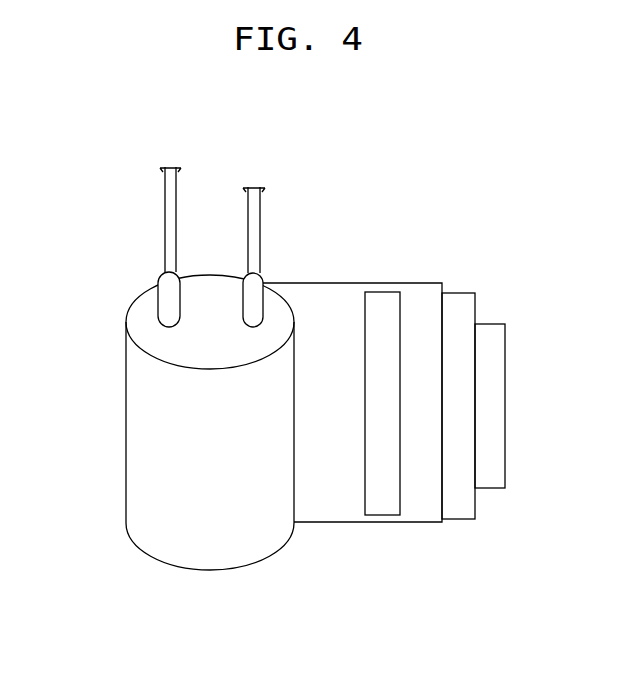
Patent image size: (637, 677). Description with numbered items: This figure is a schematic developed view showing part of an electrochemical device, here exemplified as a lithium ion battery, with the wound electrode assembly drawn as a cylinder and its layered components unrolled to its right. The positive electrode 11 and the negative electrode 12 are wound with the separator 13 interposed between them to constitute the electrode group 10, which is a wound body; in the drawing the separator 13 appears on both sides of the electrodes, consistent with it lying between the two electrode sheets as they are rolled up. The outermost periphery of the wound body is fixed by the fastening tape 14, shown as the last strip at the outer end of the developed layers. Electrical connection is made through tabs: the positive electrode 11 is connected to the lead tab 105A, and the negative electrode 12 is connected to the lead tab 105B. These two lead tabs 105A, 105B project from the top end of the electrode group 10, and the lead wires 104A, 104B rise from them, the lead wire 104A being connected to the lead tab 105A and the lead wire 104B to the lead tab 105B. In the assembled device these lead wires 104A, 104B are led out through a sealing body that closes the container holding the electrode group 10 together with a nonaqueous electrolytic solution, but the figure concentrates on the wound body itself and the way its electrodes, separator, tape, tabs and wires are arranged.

The electrode group 10 is at (411, 174).
The positive electrode 11 is at (378, 502).
The negative electrode 12 is at (455, 512).
The separator 13 is at (328, 507).
The fastening tape 14 is at (485, 480).
The lead wire 104A is at (165, 201).
The lead wire 104B is at (260, 198).
The lead tab 105A is at (170, 284).
The lead tab 105B is at (263, 282).